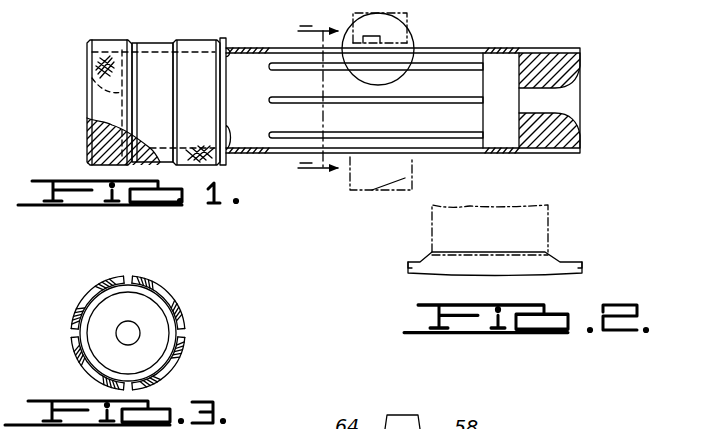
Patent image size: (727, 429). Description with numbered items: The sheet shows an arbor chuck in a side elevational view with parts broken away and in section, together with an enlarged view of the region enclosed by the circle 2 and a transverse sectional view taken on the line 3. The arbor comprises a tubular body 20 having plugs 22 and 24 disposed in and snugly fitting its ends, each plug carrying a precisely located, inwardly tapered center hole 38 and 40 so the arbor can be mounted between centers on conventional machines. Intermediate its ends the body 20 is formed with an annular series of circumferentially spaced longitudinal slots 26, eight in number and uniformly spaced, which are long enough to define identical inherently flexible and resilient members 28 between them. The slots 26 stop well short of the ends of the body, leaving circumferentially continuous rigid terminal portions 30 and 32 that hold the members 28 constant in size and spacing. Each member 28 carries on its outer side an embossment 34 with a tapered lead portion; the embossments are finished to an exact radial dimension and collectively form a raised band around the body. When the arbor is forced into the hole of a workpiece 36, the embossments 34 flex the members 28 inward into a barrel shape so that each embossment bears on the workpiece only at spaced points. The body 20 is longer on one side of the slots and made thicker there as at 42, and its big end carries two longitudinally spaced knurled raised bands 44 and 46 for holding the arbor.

In FIG. 1, the circle 2 is at (408, 35).
In FIG. 1, the section line 3 is at (318, 102).
In FIG. 1, the tubular body 20 is at (250, 45).
In FIG. 2, the tubular body 20 is at (412, 256).
In FIG. 3, the tubular body 20 is at (186, 366).
In FIG. 1, the plug 22 is at (582, 56).
In FIG. 3, the plug 22 is at (157, 348).
In FIG. 1, the plug 24 is at (95, 135).
In FIG. 1, the longitudinal slots 26 is at (466, 50).
In FIG. 2, the longitudinal slots 26 is at (573, 258).
In FIG. 3, the longitudinal slots 26 is at (186, 338).
In FIG. 1, the flexible members 28 is at (288, 38).
In FIG. 3, the flexible members 28 is at (166, 284).
In FIG. 1, the rigid terminal portion 30 is at (509, 50).
In FIG. 1, the rigid terminal portion 32 is at (228, 45).
In FIG. 1, the embossment 34 is at (409, 44).
In FIG. 2, the embossment 34 is at (552, 256).
In FIG. 3, the embossment 34 is at (162, 381).
In FIG. 1, the workpiece 36 is at (411, 176).
In FIG. 2, the workpiece 36 is at (535, 230).
In FIG. 1, the center hole 38 is at (562, 97).
In FIG. 3, the center hole 38 is at (135, 322).
In FIG. 1, the center hole 40 is at (87, 118).
In FIG. 1, the thicker portion 42 is at (145, 50).
In FIG. 1, the raised band 44 is at (190, 43).
In FIG. 1, the raised band 46 is at (101, 44).